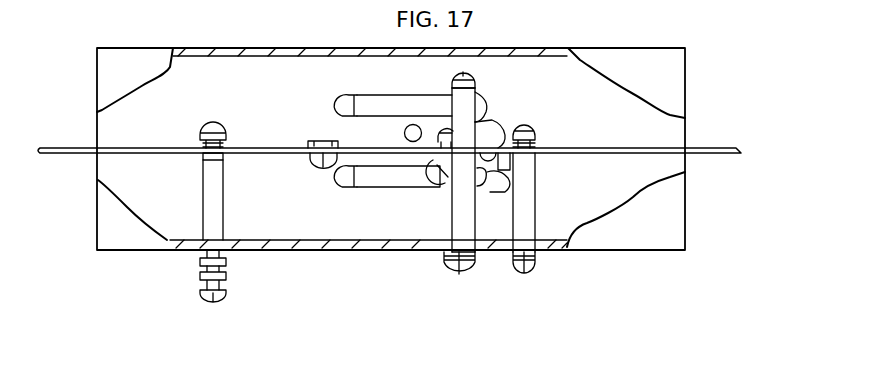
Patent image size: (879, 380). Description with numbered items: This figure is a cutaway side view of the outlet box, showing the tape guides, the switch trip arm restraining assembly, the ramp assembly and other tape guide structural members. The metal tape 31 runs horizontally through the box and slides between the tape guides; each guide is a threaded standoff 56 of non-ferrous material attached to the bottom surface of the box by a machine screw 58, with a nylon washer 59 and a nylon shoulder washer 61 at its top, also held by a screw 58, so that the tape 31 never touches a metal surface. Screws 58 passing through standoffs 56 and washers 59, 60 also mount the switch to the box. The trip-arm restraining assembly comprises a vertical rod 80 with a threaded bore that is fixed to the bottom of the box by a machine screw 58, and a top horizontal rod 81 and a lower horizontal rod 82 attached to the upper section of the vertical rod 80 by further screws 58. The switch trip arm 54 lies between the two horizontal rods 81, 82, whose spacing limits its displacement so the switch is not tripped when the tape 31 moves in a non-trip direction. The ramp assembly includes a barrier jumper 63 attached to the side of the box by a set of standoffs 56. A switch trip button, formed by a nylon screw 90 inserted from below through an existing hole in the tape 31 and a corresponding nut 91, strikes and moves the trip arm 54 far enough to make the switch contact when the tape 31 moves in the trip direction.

The metal tape 31 is at (57, 147).
The switch trip arm 54 is at (403, 133).
The standoff 56 is at (227, 205).
The machine screw 58 is at (205, 137).
The washer 59 is at (201, 157).
The washer 60 is at (228, 278).
The nylon shoulder washer 61 is at (229, 141).
The barrier jumper 63 is at (500, 123).
The vertical rod 80 is at (452, 226).
The top horizontal rod 81 is at (377, 95).
The lower horizontal rod 82 is at (415, 189).
The nylon screw 90 is at (310, 163).
The nut 91 is at (310, 140).